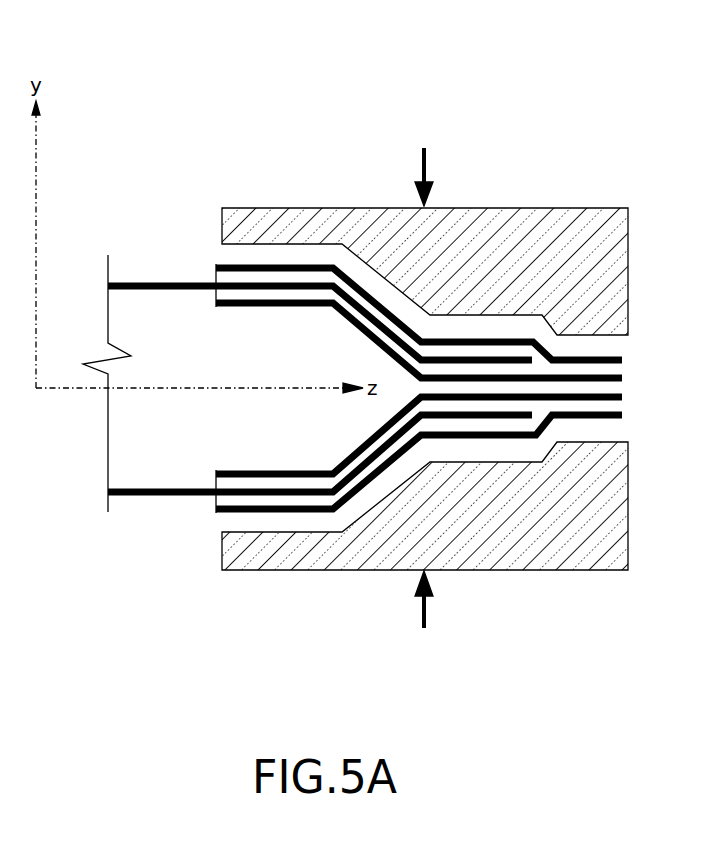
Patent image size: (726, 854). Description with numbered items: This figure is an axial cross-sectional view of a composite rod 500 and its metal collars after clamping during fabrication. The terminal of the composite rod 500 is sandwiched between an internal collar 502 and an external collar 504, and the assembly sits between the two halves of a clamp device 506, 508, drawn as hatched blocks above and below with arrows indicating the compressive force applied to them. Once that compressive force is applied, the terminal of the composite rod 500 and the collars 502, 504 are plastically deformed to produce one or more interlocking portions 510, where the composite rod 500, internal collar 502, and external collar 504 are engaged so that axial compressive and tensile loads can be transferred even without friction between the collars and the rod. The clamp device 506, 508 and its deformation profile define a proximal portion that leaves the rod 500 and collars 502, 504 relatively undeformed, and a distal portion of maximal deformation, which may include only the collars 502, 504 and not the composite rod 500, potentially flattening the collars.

The composite rod 500 is at (158, 497).
The internal collar 502 is at (289, 307).
The external collar 504 is at (217, 265).
The clamp device 506 is at (550, 208).
The clamp device 508 is at (543, 571).
The interlocking portion 510 is at (416, 394).